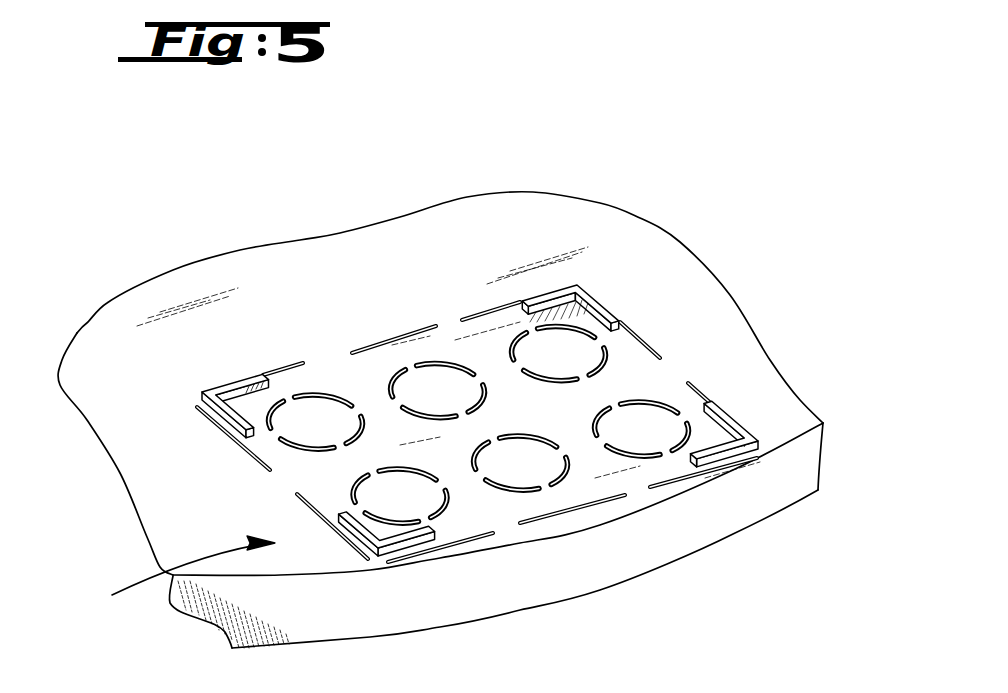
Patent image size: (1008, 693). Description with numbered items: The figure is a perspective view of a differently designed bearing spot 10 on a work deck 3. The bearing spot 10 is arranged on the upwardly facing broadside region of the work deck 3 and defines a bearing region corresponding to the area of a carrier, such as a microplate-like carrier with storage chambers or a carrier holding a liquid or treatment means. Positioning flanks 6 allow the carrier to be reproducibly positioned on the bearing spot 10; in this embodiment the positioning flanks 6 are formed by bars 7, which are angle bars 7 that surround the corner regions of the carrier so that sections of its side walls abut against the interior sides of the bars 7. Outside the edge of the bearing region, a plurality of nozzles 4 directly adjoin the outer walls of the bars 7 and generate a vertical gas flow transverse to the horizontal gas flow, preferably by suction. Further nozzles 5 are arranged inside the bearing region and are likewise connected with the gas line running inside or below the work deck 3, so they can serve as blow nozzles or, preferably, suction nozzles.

The work deck 3 is at (181, 582).
The nozzles 4 is at (337, 527).
The nozzles 5 is at (452, 505).
The positioning flanks 6 is at (247, 393).
The bars 7 is at (240, 382).
The bearing spot 10 is at (587, 457).